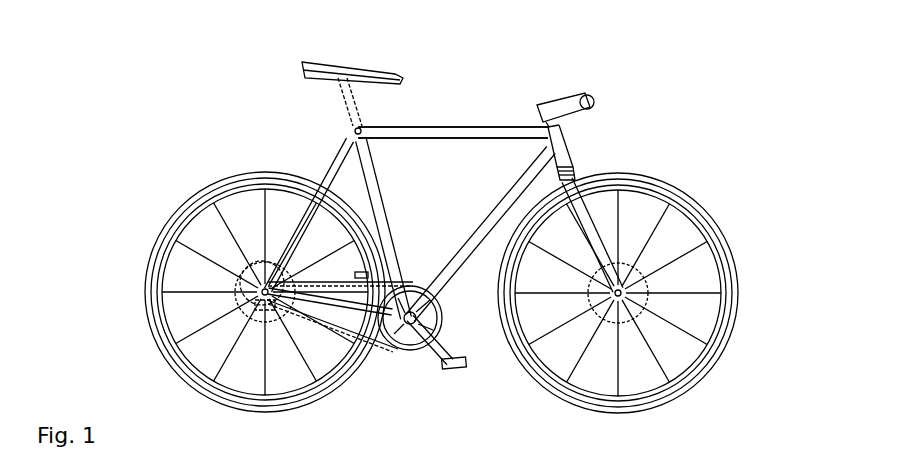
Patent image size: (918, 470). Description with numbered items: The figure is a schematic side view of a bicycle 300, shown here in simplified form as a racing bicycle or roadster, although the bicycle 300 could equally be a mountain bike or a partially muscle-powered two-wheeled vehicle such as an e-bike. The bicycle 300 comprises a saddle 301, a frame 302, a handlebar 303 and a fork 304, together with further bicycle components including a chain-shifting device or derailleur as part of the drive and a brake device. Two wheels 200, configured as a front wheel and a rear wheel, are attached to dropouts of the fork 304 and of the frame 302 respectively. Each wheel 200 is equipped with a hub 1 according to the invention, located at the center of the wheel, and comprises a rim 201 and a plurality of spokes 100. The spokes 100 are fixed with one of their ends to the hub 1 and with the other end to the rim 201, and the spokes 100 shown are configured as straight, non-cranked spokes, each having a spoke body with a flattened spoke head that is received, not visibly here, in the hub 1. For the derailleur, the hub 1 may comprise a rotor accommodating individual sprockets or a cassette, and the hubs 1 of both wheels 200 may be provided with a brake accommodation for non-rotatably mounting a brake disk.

The bicycle 300 is at (150, 75).
The saddle 301 is at (335, 67).
The frame 302 is at (460, 133).
The handlebar 303 is at (587, 95).
The fork 304 is at (583, 213).
The wheel 200 is at (157, 217).
The rim 201 is at (165, 253).
The spoke 100 is at (200, 330).
The hub 1 is at (257, 280).